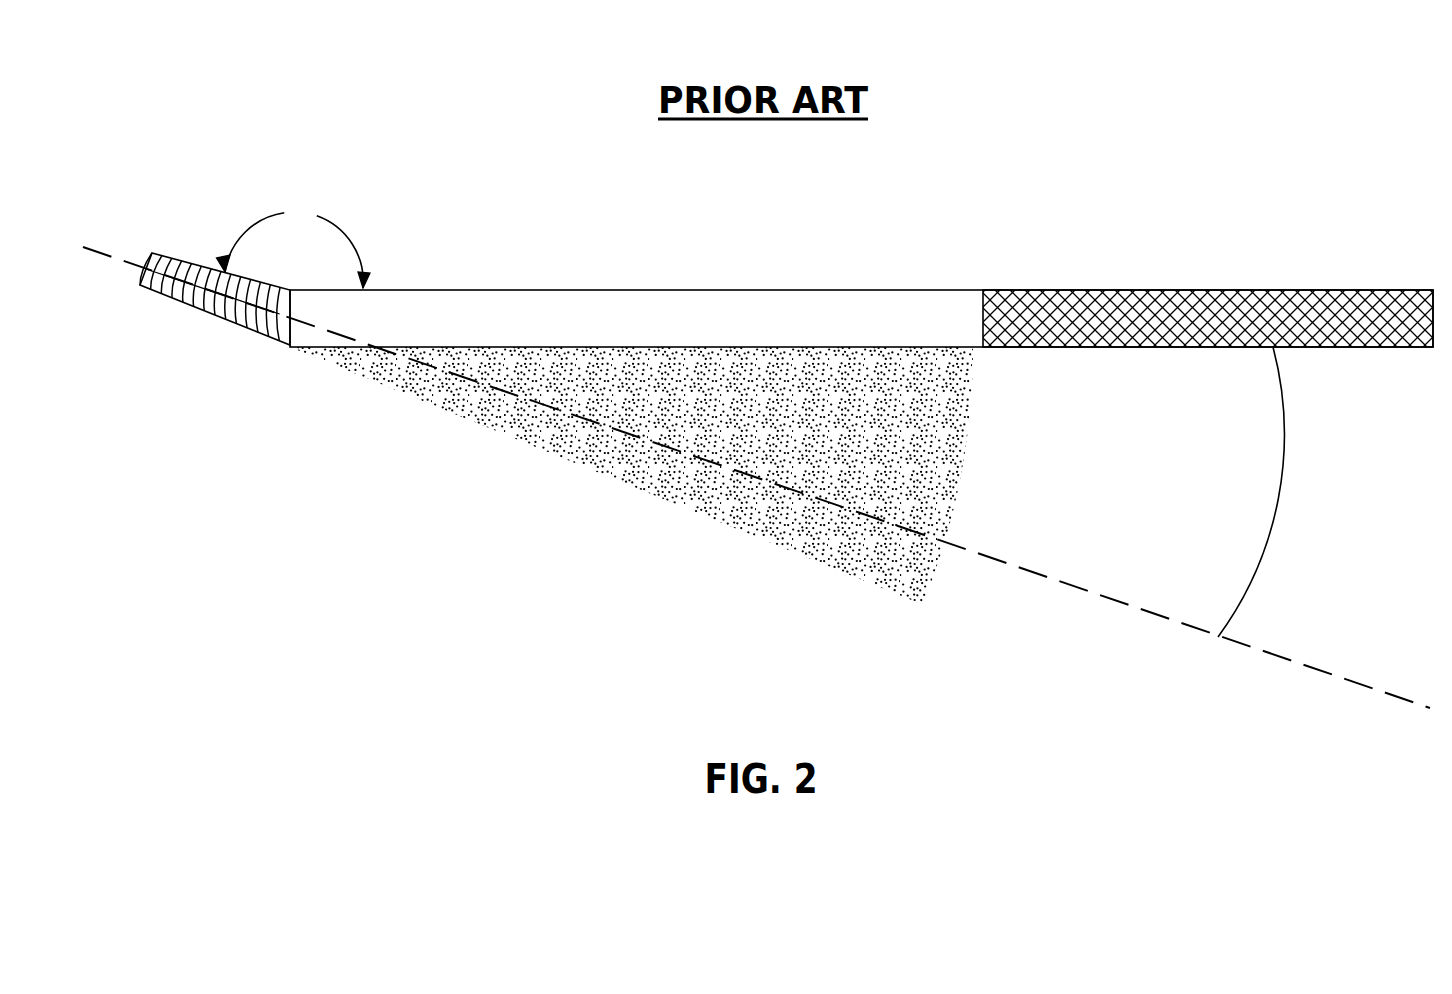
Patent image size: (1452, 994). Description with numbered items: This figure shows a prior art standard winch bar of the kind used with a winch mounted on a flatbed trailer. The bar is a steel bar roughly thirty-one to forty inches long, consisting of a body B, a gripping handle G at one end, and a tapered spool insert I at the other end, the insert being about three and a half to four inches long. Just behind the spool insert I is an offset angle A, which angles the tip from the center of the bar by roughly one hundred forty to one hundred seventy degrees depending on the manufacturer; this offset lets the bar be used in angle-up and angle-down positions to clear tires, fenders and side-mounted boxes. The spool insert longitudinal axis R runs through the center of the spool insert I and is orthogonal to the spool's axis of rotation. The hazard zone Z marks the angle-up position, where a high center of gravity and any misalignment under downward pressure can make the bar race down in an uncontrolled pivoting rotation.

The offset angle A is at (294, 248).
The body B is at (657, 352).
The gripping handle G is at (1185, 348).
The spool insert I is at (237, 322).
The spool insert longitudinal axis R is at (723, 467).
The hazard zone Z is at (1283, 467).